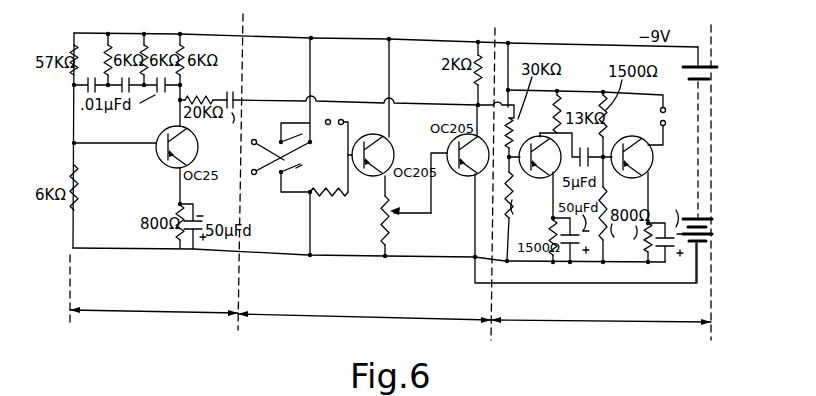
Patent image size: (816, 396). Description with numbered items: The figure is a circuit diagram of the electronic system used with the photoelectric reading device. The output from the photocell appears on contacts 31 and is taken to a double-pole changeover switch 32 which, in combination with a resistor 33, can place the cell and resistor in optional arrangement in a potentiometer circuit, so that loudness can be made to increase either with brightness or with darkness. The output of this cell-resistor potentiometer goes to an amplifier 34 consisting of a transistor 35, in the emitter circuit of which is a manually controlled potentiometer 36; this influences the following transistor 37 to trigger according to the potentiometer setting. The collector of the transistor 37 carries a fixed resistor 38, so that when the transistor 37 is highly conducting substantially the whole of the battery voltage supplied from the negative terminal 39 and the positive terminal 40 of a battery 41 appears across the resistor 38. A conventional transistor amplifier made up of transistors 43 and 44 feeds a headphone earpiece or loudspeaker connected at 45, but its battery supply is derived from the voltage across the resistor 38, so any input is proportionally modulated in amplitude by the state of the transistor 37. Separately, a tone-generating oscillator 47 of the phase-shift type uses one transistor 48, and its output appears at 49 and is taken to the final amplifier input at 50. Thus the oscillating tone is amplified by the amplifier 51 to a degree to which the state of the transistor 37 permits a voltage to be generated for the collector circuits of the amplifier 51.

The contacts 31 is at (331, 131).
The double-pole changeover switch 32 is at (249, 167).
The resistor 33 is at (329, 203).
The amplifier 34 is at (315, 319).
The transistor 35 is at (387, 141).
The manually controlled potentiometer 36 is at (390, 240).
The transistor 37 is at (453, 175).
The fixed resistor 38 is at (484, 34).
The negative terminal 39 is at (701, 61).
The positive terminal 40 is at (700, 243).
The battery 41 is at (698, 167).
The transistor 43 is at (541, 134).
The transistor 44 is at (631, 137).
The headphone or loudspeaker connection 45 is at (674, 119).
The tone-generating oscillator 47 is at (158, 318).
The transistor 48 is at (172, 162).
The oscillator output 49 is at (230, 111).
The final amplifier input 50 is at (530, 195).
The amplifier 51 is at (595, 325).